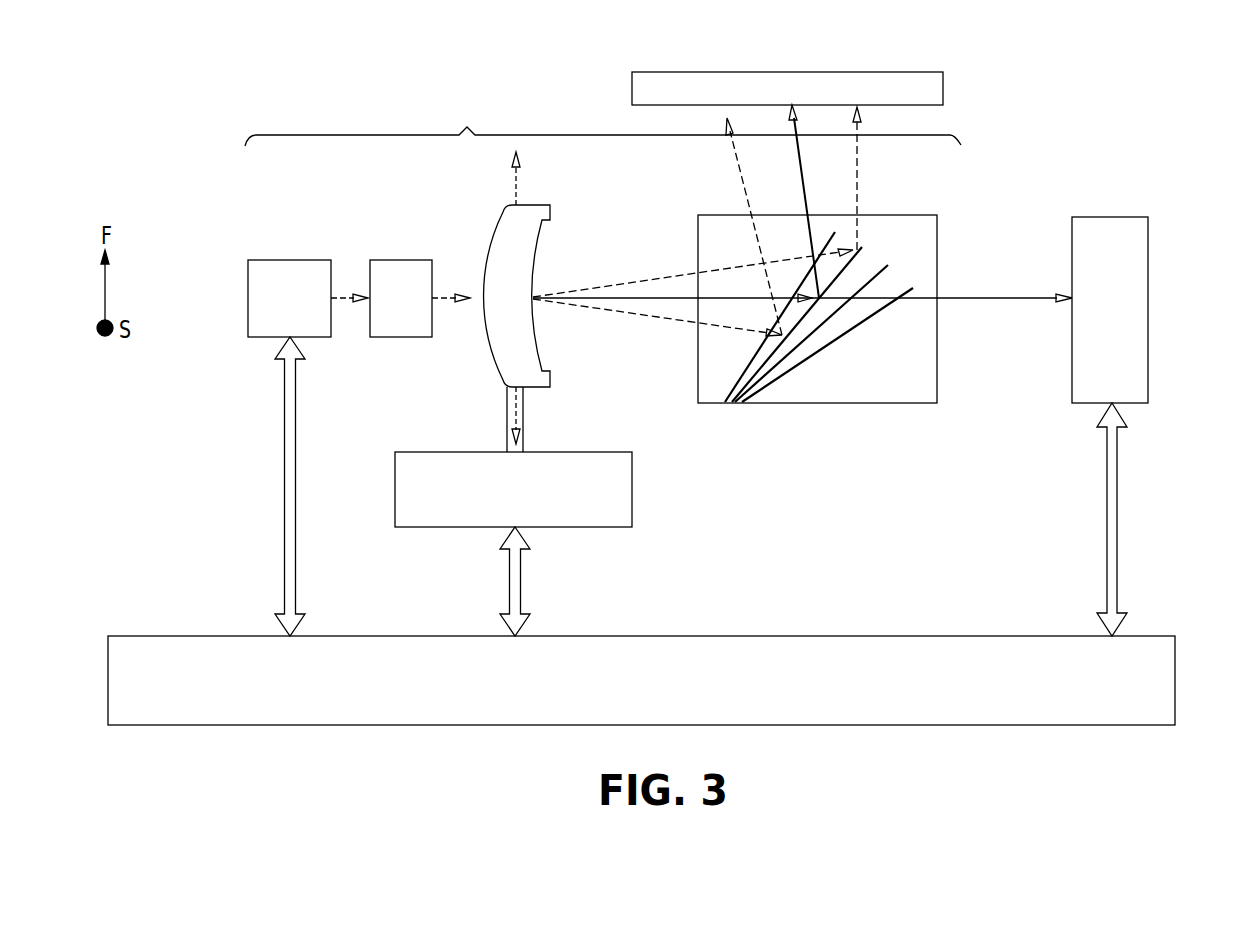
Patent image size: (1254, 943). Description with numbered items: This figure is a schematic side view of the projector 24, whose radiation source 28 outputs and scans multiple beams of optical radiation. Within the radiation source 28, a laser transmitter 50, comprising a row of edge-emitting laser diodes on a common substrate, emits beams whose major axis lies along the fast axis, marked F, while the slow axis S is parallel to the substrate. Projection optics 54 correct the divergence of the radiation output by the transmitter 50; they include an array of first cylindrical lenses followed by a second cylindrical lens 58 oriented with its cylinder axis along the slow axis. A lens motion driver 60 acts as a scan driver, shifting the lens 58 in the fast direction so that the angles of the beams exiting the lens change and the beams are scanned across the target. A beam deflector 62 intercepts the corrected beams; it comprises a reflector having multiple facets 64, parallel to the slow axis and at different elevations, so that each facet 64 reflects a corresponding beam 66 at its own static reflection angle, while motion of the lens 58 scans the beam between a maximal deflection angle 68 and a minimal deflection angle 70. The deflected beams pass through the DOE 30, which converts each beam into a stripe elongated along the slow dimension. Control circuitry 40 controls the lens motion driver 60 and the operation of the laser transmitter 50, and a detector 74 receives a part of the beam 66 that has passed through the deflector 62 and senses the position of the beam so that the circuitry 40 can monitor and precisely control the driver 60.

The projector 24 is at (1152, 87).
The radiation source 28 is at (603, 121).
The DOE 30 is at (945, 83).
The control circuitry 40 is at (363, 725).
The laser transmitter 50 is at (287, 260).
The projection optics 54 is at (408, 260).
The second cylindrical lens 58 is at (548, 203).
The lens motion driver 60 is at (632, 473).
The beam deflector 62 is at (940, 383).
The facets 64 is at (848, 250).
The beam 66 is at (668, 297).
The maximal deflection angle 68 is at (740, 182).
The minimal deflection angle 70 is at (857, 168).
The detector 74 is at (1117, 217).